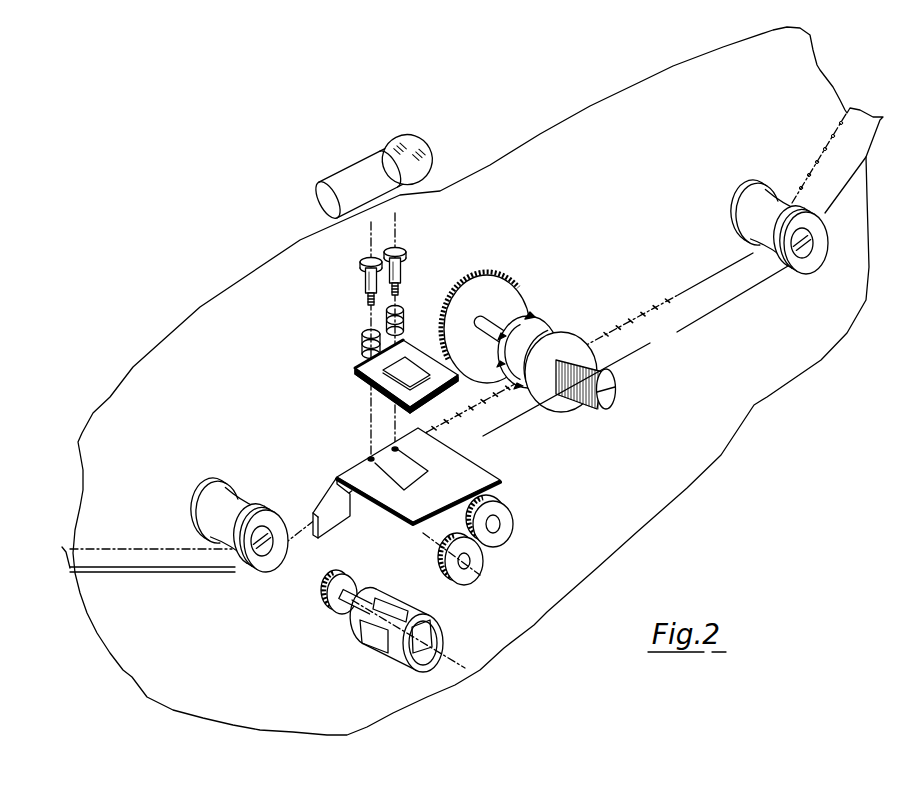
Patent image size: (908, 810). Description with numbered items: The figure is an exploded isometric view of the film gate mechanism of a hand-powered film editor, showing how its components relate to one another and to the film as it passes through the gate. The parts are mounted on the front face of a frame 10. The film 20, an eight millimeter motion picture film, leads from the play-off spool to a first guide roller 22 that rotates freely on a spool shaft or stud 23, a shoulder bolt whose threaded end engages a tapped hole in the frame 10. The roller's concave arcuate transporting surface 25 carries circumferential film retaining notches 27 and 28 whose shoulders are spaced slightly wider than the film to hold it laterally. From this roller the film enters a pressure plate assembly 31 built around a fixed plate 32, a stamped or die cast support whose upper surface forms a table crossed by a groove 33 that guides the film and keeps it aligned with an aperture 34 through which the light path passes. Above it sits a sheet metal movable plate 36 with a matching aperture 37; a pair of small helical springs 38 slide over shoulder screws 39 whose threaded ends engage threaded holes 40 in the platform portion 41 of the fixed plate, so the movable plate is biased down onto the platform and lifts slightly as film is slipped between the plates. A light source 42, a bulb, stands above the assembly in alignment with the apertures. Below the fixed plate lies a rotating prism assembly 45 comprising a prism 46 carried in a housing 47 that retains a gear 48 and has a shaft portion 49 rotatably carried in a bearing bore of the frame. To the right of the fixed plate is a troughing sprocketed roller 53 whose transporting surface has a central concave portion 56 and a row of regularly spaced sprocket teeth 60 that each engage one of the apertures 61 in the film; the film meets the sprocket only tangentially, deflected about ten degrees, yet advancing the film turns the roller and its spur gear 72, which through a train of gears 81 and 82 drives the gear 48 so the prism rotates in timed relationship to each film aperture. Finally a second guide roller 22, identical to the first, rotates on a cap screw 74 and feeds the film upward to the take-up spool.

The frame 10 is at (668, 468).
The film 20 is at (134, 562).
The guide roller 22 is at (535, 394).
The spool shaft or stud 23 is at (260, 557).
The outer surface 25 is at (247, 503).
The film retaining notch 27 is at (221, 500).
The film retaining notch 28 is at (243, 553).
The pressure plate assembly 31 is at (451, 489).
The fixed plate 32 is at (426, 489).
The groove 33 is at (443, 471).
The aperture 34 is at (400, 473).
The movable plate 36 is at (385, 370).
The aperture 37 is at (405, 374).
The helical springs 38 is at (386, 312).
The shoulder screws 39 is at (377, 254).
The threaded holes 40 is at (393, 447).
The platform portion 41 is at (347, 474).
The light source 42 is at (367, 170).
The rotating prism assembly 45 is at (385, 640).
The prism 46 is at (428, 638).
The housing 47 is at (417, 607).
The gear 48 is at (328, 607).
The shaft portion 49 is at (356, 613).
The troughing sprocketed roller 53 is at (597, 358).
The central concave portion 56 is at (540, 327).
The sprocket teeth 60 is at (531, 317).
The apertures 61 is at (622, 323).
The spur gear 72 is at (509, 281).
The cap screw 74 is at (808, 256).
The gear 81 is at (468, 568).
The gear 82 is at (510, 522).